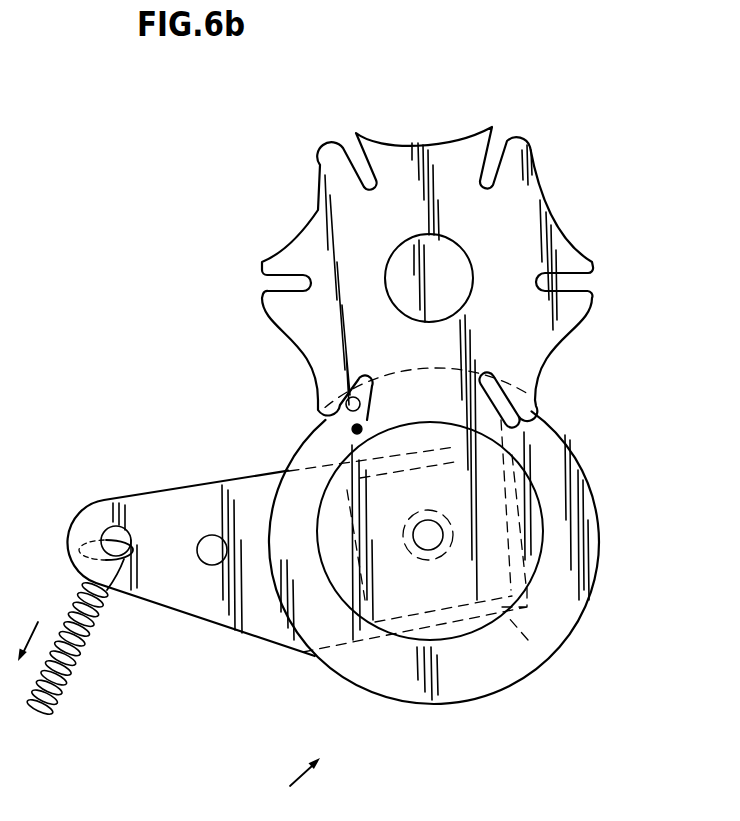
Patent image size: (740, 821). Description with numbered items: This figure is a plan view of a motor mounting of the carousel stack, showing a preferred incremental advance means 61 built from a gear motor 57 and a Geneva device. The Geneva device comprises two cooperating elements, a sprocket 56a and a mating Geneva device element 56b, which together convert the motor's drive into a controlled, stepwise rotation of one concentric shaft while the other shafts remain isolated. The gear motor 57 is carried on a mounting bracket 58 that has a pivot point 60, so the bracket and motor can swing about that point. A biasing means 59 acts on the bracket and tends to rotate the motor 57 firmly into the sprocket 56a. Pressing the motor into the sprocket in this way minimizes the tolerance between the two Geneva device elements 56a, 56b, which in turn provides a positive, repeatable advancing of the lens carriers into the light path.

The sprocket 56a is at (546, 209).
The Geneva device element 56b is at (586, 520).
The gear motor 57 is at (528, 640).
The mounting bracket 58 is at (165, 500).
The biasing means 59 is at (77, 661).
The pivot point 60 is at (207, 557).
The incremental advance means 61 is at (289, 786).